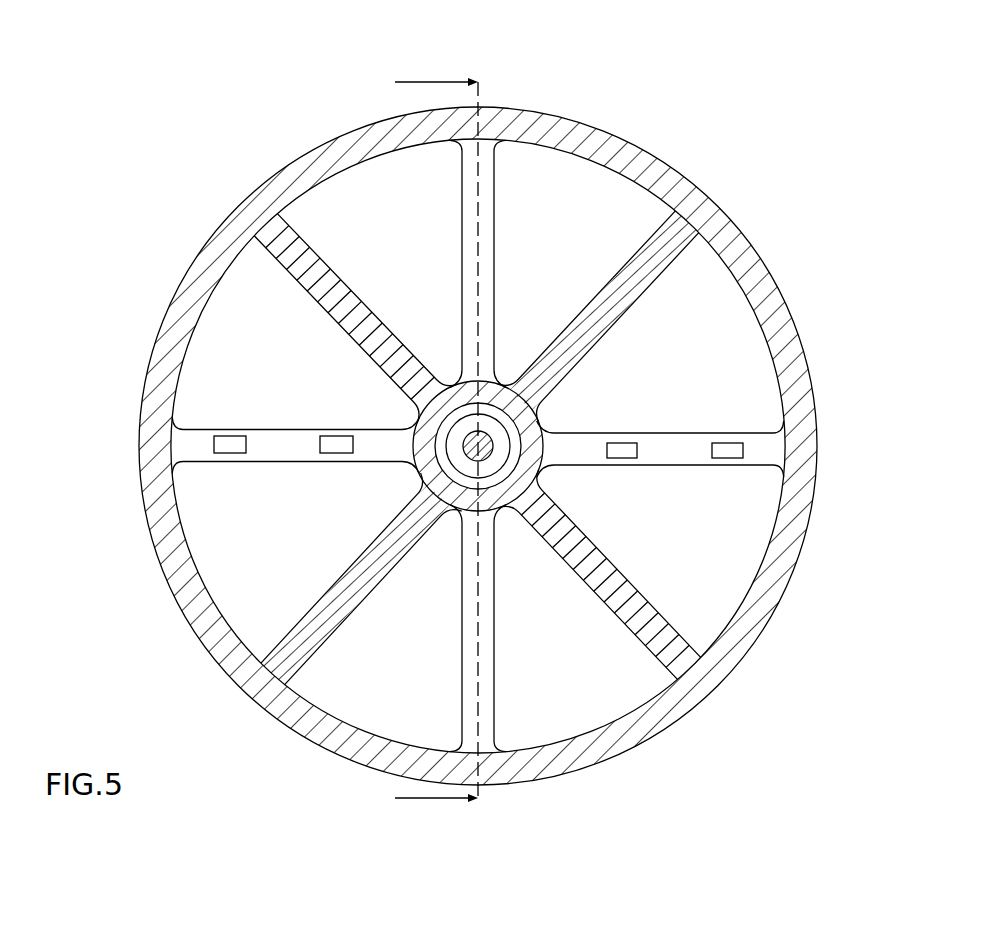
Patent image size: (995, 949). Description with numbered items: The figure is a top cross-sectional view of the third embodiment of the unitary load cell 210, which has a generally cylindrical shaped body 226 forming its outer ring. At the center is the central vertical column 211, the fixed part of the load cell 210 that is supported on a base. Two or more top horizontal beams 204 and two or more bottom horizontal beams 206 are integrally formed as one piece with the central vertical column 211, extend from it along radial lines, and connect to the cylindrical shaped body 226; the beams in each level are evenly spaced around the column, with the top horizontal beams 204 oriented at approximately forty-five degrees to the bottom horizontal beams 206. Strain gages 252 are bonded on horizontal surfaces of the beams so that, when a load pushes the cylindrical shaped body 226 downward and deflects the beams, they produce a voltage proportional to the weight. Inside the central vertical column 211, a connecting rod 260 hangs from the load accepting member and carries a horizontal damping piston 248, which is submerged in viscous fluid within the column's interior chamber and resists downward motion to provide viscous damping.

The load cell 210 is at (706, 86).
The cylindrical shaped body 226 is at (722, 194).
The bottom horizontal beams 206 is at (497, 229).
The top horizontal beams 204 is at (336, 277).
The central vertical column 211 is at (544, 413).
The damping piston 248 is at (496, 492).
The connecting rod 260 is at (492, 450).
The strain gages 252 is at (236, 454).